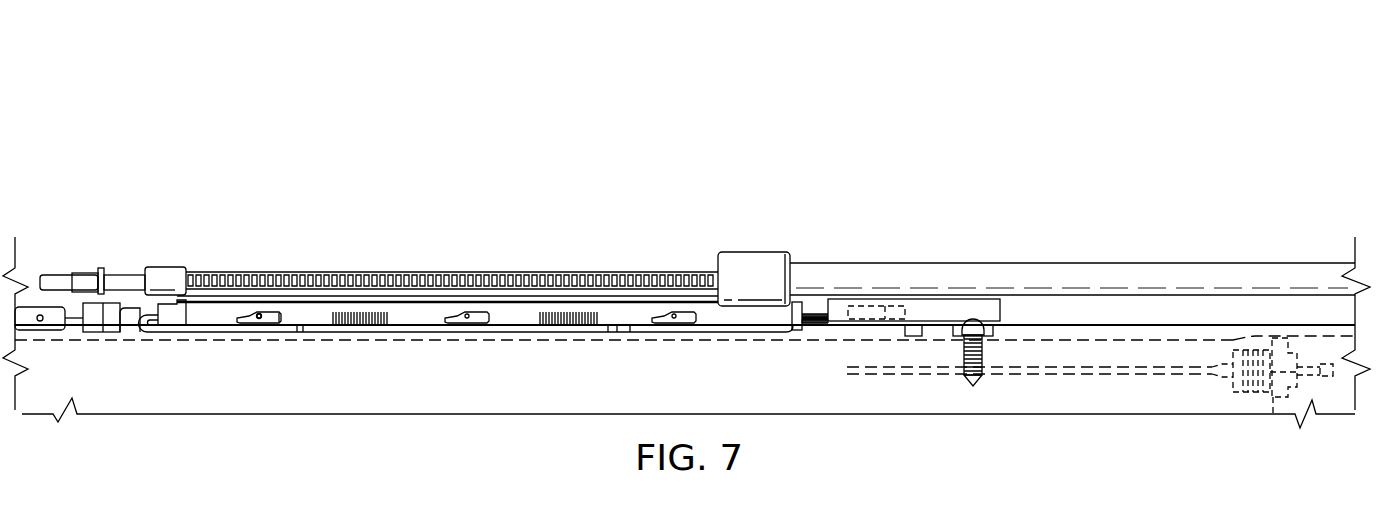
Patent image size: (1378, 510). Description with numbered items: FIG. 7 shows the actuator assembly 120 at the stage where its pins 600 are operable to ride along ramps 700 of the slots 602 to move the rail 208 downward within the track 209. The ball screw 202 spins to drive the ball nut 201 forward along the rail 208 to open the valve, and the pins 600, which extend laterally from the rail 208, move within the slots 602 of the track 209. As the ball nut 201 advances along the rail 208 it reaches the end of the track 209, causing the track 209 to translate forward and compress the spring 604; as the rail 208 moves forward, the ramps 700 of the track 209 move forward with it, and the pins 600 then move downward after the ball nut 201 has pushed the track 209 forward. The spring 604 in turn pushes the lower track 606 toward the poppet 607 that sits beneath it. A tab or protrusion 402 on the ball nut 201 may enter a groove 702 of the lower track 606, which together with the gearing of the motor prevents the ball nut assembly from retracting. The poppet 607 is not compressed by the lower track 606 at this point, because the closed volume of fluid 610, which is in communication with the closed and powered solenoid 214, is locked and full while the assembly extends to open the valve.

The actuator assembly 120 is at (377, 82).
The ball nut 201 is at (751, 249).
The ball screw 202 is at (593, 272).
The rail 208 is at (517, 300).
The track 209 is at (410, 318).
The solenoid 214 is at (1252, 397).
The tab or protrusion 402 is at (810, 302).
The pins 600 is at (258, 320).
The slots 602 is at (291, 317).
The spring 604 is at (812, 325).
The lower track 606 is at (918, 300).
The poppet 607 is at (975, 320).
The closed volume of fluid 610 is at (1040, 375).
The ramps 700 is at (250, 312).
The groove 702 is at (855, 307).